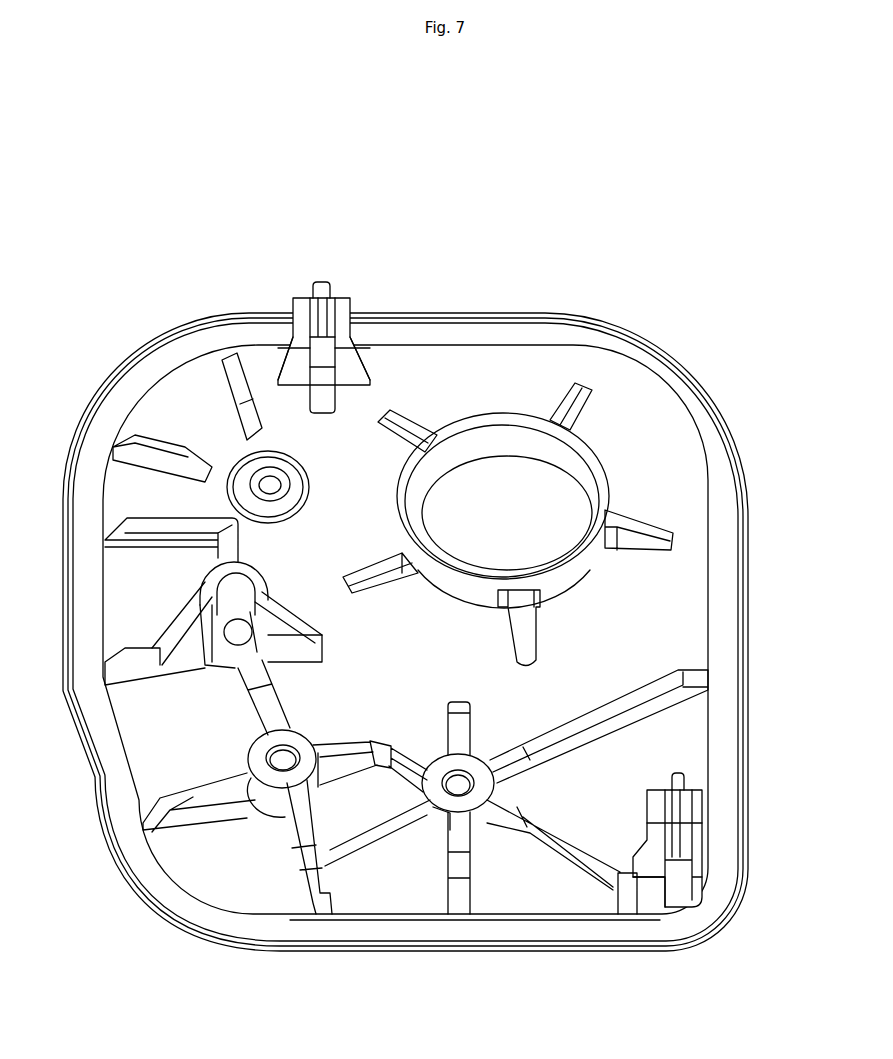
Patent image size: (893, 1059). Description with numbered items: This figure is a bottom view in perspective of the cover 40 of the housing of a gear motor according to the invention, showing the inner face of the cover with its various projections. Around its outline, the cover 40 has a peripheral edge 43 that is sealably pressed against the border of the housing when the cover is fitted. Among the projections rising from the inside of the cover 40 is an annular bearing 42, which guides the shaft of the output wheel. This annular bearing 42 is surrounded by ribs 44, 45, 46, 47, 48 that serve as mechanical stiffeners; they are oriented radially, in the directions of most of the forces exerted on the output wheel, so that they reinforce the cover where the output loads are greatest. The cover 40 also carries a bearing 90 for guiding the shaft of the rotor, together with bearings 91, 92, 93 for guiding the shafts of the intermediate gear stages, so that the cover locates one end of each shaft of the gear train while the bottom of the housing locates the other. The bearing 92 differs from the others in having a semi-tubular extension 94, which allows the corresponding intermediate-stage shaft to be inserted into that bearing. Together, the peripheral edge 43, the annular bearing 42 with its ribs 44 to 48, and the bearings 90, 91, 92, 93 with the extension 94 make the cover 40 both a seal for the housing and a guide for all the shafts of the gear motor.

The cover 40 is at (190, 413).
The annular bearing 42 is at (503, 425).
The peripheral edge 43 is at (640, 360).
The rib 44 is at (572, 398).
The rib 45 is at (677, 532).
The rib 46 is at (540, 650).
The rib 47 is at (340, 575).
The rib 48 is at (410, 423).
The bearing 90 is at (477, 787).
The bearing 91 is at (247, 800).
The bearing 92 is at (205, 662).
The bearing 93 is at (227, 490).
The semi-tubular extension 94 is at (205, 582).